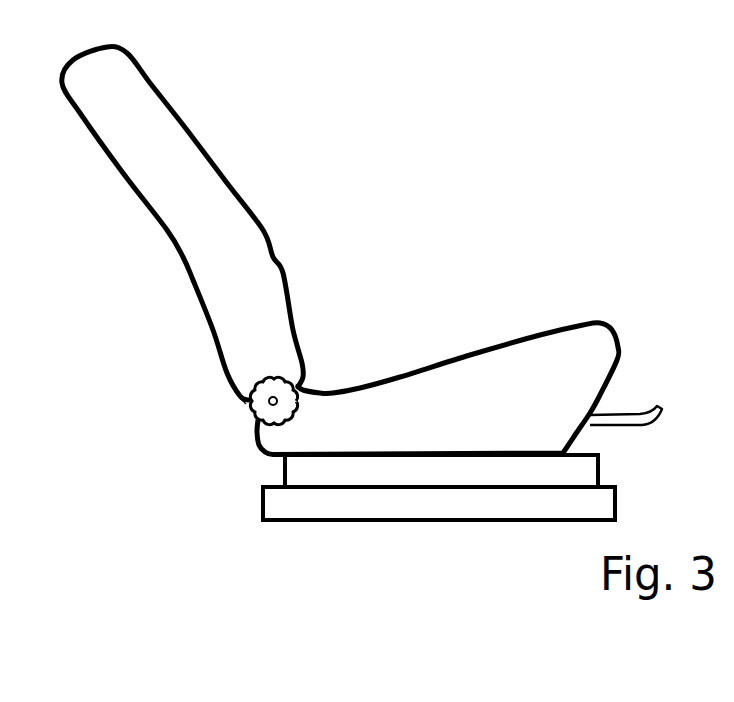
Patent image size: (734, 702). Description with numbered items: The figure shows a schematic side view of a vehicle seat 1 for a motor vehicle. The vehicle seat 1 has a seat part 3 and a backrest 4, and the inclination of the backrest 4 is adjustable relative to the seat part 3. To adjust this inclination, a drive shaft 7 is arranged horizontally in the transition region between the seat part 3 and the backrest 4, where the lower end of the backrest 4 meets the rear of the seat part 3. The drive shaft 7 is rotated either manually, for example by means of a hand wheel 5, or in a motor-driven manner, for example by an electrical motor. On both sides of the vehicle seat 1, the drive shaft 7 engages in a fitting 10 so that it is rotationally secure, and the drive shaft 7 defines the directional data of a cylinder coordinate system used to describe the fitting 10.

The vehicle seat 1 is at (362, 283).
The seat part 3 is at (465, 372).
The backrest 4 is at (163, 148).
The hand wheel 5 is at (279, 399).
The drive shaft 7 is at (270, 406).
The fitting 10 is at (245, 405).